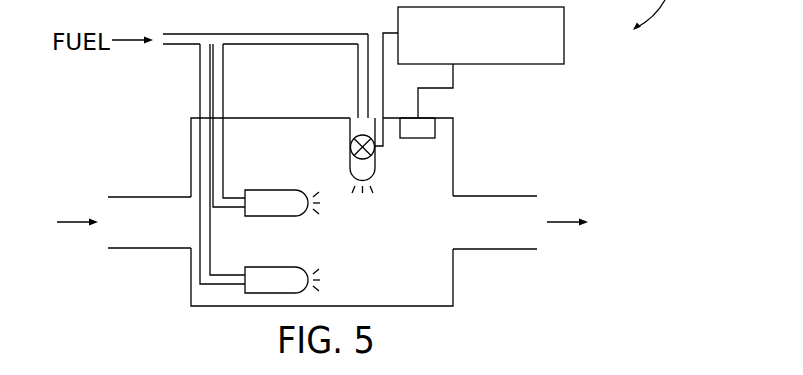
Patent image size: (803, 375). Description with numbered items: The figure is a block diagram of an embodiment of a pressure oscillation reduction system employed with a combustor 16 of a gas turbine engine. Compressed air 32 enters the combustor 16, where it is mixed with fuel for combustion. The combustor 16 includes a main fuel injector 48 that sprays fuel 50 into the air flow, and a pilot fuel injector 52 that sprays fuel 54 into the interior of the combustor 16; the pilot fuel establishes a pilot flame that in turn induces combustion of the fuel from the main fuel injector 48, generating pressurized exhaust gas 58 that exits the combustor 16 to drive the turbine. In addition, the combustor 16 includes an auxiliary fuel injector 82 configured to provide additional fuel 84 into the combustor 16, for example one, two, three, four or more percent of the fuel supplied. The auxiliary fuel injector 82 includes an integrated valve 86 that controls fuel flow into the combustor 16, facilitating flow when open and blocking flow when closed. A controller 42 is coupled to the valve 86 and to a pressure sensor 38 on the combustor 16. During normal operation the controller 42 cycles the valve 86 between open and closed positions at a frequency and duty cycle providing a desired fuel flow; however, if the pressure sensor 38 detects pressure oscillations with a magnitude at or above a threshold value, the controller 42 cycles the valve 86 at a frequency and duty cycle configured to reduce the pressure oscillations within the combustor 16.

The combustor 16 is at (453, 170).
The compressed air 32 is at (73, 222).
The pressure sensor 38 is at (435, 125).
The controller 42 is at (564, 33).
The main fuel injector 48 is at (257, 268).
The fuel 50 is at (322, 268).
The pilot fuel injector 52 is at (257, 190).
The fuel 54 is at (322, 216).
The pressurized exhaust gas 58 is at (565, 218).
The auxiliary fuel injector 82 is at (377, 161).
The additional fuel 84 is at (379, 190).
The integrated valve 86 is at (352, 128).